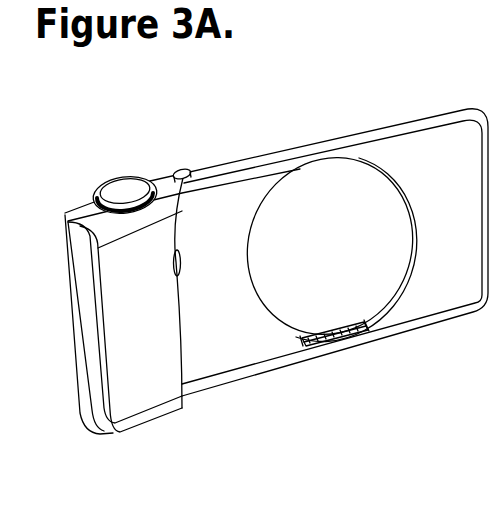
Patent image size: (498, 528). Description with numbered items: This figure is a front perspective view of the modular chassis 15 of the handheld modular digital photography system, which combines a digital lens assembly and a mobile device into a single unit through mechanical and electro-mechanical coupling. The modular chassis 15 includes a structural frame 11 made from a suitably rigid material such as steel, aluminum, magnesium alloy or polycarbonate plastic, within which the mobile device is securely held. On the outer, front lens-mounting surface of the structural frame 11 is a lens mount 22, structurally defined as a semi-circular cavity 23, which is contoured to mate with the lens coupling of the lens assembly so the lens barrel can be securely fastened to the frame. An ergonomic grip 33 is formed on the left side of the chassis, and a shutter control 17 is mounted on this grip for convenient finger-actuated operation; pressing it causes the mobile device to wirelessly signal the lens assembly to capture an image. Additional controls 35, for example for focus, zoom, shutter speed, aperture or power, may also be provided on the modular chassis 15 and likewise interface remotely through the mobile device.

The structural frame 11 is at (490, 303).
The modular chassis 15 is at (375, 110).
The shutter control 17 is at (117, 180).
The lens mount 22 is at (349, 326).
The semi-circular cavity 23 is at (309, 188).
The ergonomic grip 33 is at (100, 347).
The additional controls 35 is at (182, 170).